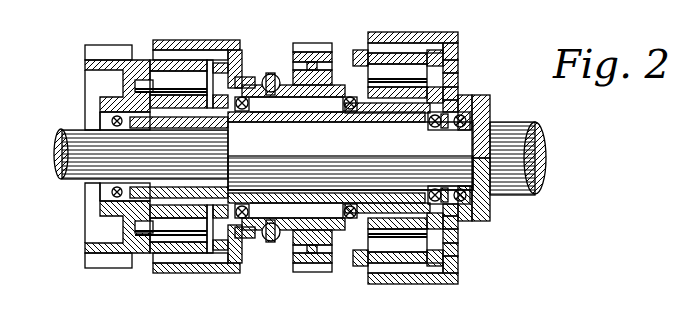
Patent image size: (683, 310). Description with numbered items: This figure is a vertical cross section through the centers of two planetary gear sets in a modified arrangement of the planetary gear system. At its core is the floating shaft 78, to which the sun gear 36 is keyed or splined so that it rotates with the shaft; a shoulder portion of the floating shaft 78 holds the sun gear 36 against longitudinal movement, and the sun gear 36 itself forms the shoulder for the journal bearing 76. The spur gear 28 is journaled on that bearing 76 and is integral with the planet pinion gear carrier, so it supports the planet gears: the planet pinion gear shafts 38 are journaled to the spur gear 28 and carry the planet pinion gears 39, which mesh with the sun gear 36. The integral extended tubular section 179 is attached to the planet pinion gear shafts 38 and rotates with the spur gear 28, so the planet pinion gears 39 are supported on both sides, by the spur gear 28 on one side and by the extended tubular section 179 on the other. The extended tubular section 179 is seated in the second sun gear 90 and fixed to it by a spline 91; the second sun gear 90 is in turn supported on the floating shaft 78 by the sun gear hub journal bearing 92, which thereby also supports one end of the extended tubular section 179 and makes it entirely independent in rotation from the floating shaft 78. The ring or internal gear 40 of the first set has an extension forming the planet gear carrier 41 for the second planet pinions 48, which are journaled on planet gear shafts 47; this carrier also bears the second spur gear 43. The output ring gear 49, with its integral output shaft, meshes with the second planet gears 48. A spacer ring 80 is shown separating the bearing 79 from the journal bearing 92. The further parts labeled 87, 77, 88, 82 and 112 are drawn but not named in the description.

The spur gear 28 is at (85, 63).
The sun gear 36 is at (155, 86).
The planet pinion gear shafts 38 is at (172, 78).
The ring or internal gear 40 is at (180, 43).
The planet pinion gears 39 is at (197, 62).
The extended tubular section 179 is at (213, 67).
The bearing carrier plate 87 is at (278, 67).
The pin 77 is at (253, 78).
The second spur gear 43 is at (312, 43).
The planet gear carrier 41 is at (363, 50).
The bearing sleeve 88 is at (385, 58).
The second planet pinions 48 is at (402, 62).
The output ring gear 49 is at (443, 32).
The planet gear shafts 47 is at (458, 32).
The second sun gear 90 is at (460, 45).
The spline 91 is at (460, 70).
The sun gear hub journal bearing 92 is at (460, 95).
The bearing 79 is at (488, 98).
The spacer ring 80 is at (446, 128).
The sleeve 82 is at (155, 132).
The bearing 76 is at (113, 118).
The floating shaft 78 is at (55, 148).
The bearing 112 is at (390, 286).